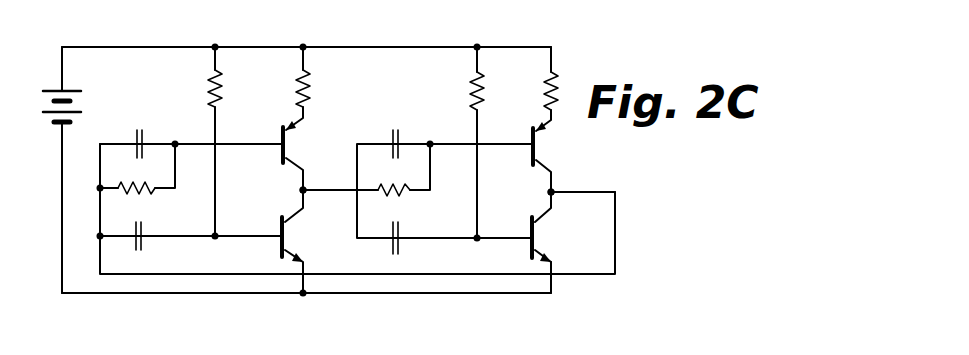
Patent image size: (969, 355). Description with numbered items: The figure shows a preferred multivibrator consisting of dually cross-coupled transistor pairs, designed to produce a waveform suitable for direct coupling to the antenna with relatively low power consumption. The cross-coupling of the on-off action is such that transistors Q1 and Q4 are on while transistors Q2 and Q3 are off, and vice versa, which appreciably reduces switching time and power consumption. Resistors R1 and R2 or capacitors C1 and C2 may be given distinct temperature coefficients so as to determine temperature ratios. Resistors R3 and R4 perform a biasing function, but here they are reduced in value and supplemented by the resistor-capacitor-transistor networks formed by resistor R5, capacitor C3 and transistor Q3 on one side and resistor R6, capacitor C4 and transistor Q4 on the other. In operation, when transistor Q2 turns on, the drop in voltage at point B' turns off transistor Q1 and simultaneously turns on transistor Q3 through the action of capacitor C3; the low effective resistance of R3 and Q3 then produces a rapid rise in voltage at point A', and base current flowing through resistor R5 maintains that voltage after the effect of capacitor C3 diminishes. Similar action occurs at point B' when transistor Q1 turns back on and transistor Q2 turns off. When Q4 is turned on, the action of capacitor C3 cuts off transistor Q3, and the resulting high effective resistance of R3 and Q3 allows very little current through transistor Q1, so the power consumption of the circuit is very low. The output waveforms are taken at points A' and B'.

The resistor R1 is at (209, 92).
The resistor R2 is at (471, 93).
The resistor R3 is at (297, 97).
The resistor R4 is at (545, 99).
The resistor R5 is at (142, 194).
The resistor R6 is at (403, 196).
The capacitor C1 is at (141, 250).
The capacitor C2 is at (400, 250).
The capacitor C3 is at (144, 137).
The capacitor C4 is at (400, 137).
The transistor Q1 is at (304, 239).
The transistor Q2 is at (556, 239).
The transistor Q3 is at (305, 142).
The transistor Q4 is at (557, 143).
The point A' is at (273, 181).
The point B' is at (524, 182).